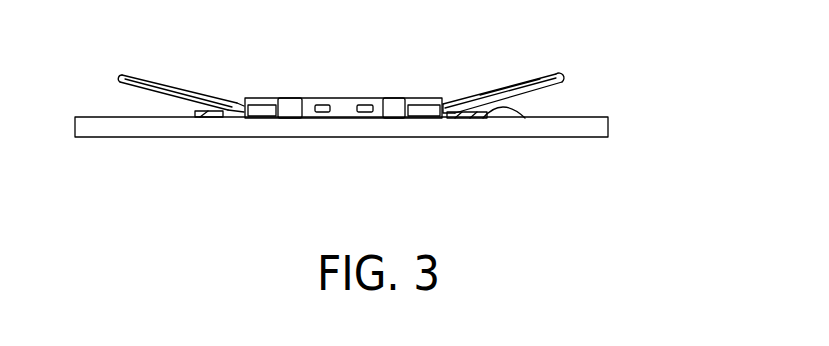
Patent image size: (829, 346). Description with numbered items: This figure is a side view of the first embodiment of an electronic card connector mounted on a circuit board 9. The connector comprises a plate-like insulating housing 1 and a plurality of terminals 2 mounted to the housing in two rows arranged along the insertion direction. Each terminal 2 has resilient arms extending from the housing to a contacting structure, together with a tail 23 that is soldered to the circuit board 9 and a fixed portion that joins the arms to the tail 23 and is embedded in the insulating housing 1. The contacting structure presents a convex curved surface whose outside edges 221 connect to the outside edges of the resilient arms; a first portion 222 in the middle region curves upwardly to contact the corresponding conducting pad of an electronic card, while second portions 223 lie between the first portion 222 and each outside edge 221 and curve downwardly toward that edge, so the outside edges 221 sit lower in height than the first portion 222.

The insulating housing 1 is at (376, 97).
The terminal 2 is at (132, 73).
The circuit board 9 is at (595, 127).
The tail 23 is at (525, 118).
The outside edge 221 is at (553, 83).
The first portion 222 is at (552, 73).
The second portion 223 is at (522, 83).